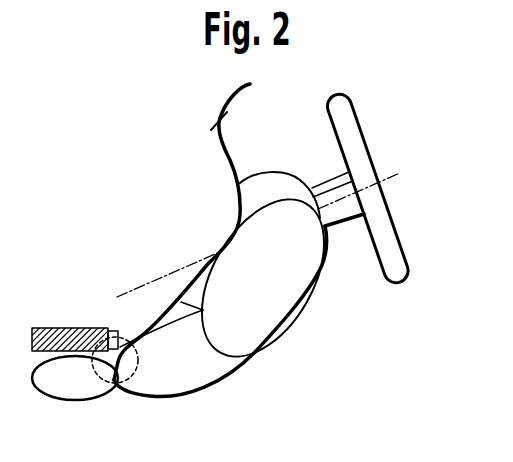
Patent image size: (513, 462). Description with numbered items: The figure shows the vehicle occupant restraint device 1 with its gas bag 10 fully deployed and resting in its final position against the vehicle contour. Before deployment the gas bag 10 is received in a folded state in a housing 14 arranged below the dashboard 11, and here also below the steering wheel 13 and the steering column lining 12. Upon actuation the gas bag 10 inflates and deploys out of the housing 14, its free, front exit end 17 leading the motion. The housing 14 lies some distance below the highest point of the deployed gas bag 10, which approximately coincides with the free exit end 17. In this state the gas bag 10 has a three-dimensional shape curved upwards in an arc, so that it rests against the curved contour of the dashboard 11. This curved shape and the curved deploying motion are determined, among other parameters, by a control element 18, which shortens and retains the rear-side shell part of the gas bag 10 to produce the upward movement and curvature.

The vehicle occupant restraint device 1 is at (156, 194).
The gas bag 10 is at (283, 298).
The dashboard 11 is at (250, 84).
The steering column lining 12 is at (264, 189).
The steering wheel 13 is at (343, 122).
The housing 14 is at (64, 336).
The free, front exit end 17 is at (372, 172).
The control element 18 is at (117, 338).